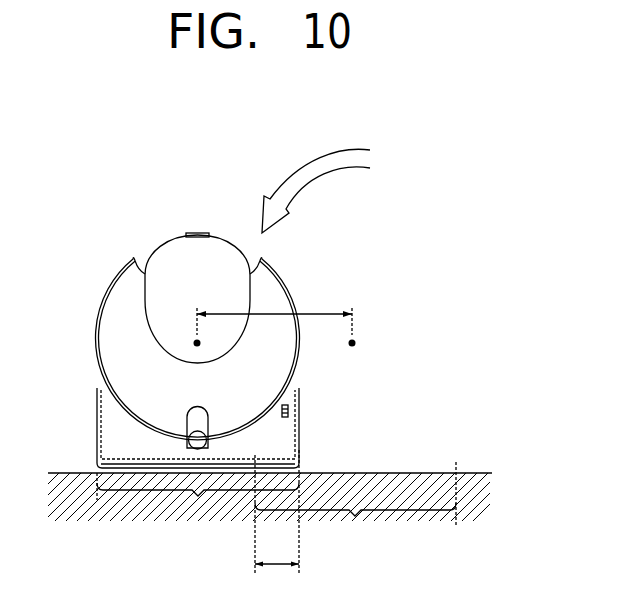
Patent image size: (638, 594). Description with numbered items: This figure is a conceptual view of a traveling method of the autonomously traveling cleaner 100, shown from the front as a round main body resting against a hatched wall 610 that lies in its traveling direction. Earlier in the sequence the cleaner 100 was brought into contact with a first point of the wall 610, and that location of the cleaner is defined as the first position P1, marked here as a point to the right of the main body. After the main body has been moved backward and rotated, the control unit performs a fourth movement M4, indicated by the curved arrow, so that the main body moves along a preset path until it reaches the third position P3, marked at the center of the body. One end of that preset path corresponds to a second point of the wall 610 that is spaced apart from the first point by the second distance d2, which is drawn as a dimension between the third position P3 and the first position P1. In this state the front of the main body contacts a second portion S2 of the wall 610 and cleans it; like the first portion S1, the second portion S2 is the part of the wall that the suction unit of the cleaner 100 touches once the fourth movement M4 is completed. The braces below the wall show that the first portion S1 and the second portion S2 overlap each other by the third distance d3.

The cleaner 100 is at (108, 259).
The wall 610 is at (483, 505).
The fourth movement M4 is at (316, 181).
The first position P1 is at (367, 345).
The third position P3 is at (213, 345).
The second distance d2 is at (274, 313).
The third distance d3 is at (277, 512).
The first portion S1 is at (355, 503).
The second portion S2 is at (198, 499).